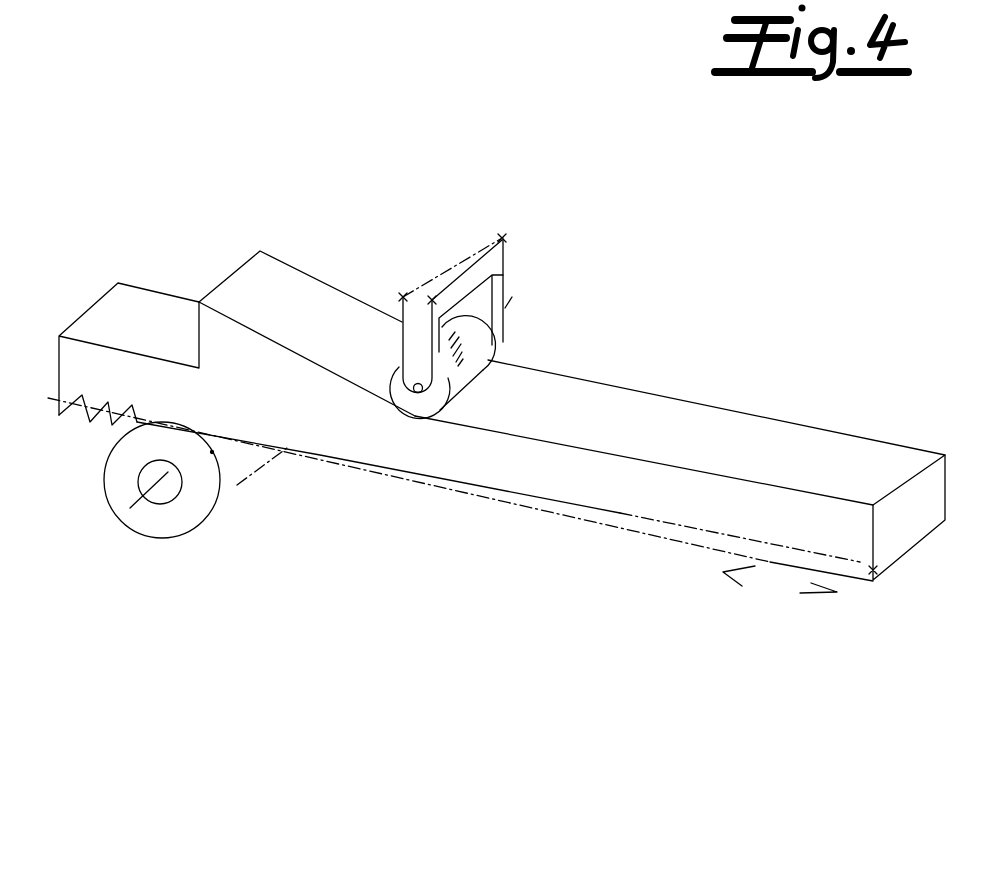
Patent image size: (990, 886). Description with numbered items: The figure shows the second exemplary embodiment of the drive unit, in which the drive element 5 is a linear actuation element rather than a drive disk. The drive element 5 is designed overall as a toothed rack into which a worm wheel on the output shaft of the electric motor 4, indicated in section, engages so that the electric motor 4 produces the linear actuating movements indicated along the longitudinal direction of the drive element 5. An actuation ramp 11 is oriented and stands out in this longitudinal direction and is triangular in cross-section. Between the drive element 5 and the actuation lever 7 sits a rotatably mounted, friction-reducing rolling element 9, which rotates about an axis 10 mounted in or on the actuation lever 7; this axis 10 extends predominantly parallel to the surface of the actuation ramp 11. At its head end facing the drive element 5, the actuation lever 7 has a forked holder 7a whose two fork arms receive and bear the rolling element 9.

The electric motor 4 is at (247, 502).
The drive element 5 is at (558, 524).
The actuation lever 7 is at (474, 223).
The forked holder 7a is at (452, 300).
The rolling element 9 is at (467, 366).
The axis 10 is at (419, 393).
The actuation ramp 11 is at (306, 264).